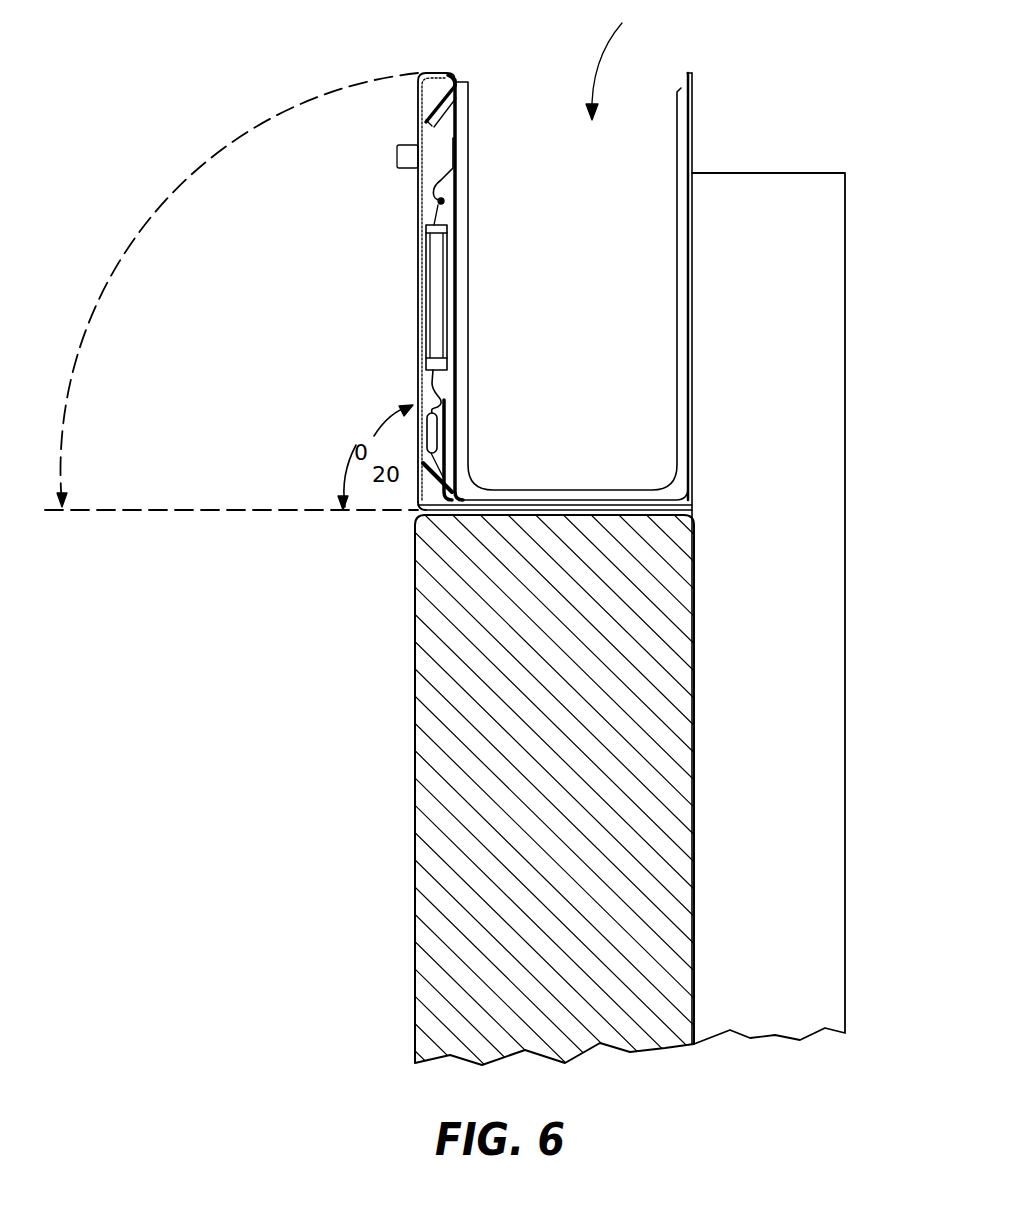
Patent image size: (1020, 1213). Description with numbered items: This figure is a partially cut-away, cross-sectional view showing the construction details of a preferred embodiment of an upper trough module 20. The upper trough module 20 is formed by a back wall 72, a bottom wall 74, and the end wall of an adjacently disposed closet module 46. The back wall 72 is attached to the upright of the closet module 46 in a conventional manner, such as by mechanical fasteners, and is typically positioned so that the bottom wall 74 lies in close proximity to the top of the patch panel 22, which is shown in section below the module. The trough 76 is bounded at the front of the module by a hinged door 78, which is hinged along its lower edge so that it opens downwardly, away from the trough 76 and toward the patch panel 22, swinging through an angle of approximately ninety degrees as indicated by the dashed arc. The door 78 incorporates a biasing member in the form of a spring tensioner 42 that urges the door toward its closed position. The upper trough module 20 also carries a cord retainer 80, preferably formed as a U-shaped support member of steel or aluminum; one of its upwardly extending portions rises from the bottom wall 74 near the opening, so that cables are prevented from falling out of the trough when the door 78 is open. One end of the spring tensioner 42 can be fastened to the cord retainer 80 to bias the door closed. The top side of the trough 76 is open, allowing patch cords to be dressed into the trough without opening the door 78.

The upper trough module 20 is at (392, 347).
The patch panel 22 is at (472, 718).
The spring tensioner 42 is at (437, 271).
The closet module 46 is at (790, 490).
The back wall 72 is at (694, 118).
The bottom wall 74 is at (231, 538).
The trough 76 is at (620, 60).
The hinged door 78 is at (440, 127).
The cord retainer 80 is at (470, 125).